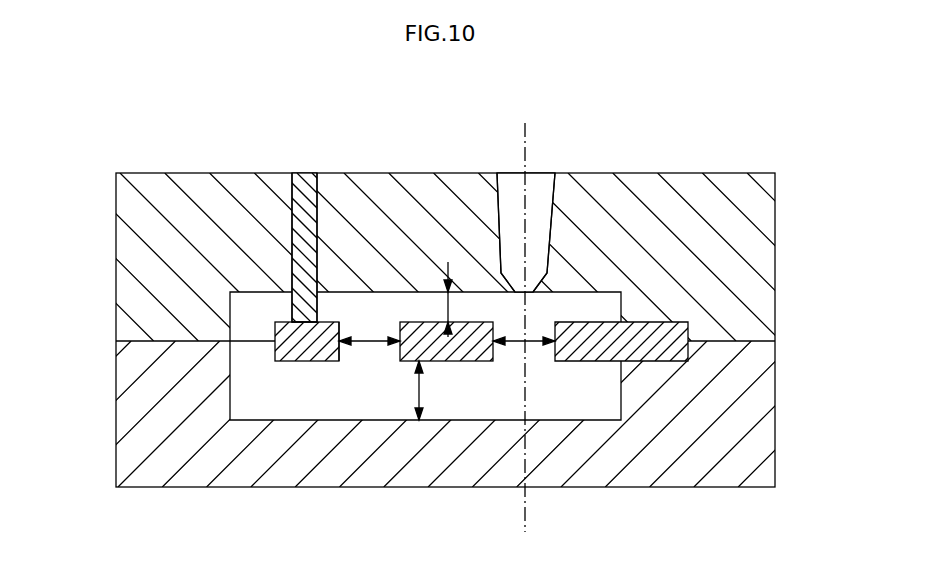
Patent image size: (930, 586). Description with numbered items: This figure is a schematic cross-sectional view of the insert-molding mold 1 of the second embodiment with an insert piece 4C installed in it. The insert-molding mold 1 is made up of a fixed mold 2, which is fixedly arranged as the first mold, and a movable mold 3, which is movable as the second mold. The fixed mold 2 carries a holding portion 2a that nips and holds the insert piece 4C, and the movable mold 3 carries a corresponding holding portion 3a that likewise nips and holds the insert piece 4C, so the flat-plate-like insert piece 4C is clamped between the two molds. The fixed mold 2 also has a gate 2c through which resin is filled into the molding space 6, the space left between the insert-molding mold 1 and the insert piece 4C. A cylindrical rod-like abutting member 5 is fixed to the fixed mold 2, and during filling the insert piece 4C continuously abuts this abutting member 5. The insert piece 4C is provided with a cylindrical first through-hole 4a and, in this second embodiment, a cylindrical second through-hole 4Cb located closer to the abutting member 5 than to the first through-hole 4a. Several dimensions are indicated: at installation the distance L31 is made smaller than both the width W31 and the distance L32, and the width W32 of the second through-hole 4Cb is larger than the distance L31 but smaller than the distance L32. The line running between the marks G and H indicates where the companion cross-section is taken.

The insert-molding mold 1 is at (43, 242).
The fixed mold 2 is at (138, 257).
The movable mold 3 is at (138, 412).
The abutting member 5 is at (302, 182).
The molding space 6 is at (632, 389).
The gate 2c is at (498, 210).
The insert piece 4C is at (292, 352).
The second through-hole 4Cb is at (348, 322).
The first through-hole 4a is at (543, 323).
The holding portion 2a is at (660, 323).
The holding portion 3a is at (664, 352).
The distance L31 is at (447, 310).
The distance L32 is at (422, 393).
The width W31 is at (518, 345).
The width W32 is at (367, 343).
The section line end point G is at (535, 140).
The section line end point H is at (535, 520).